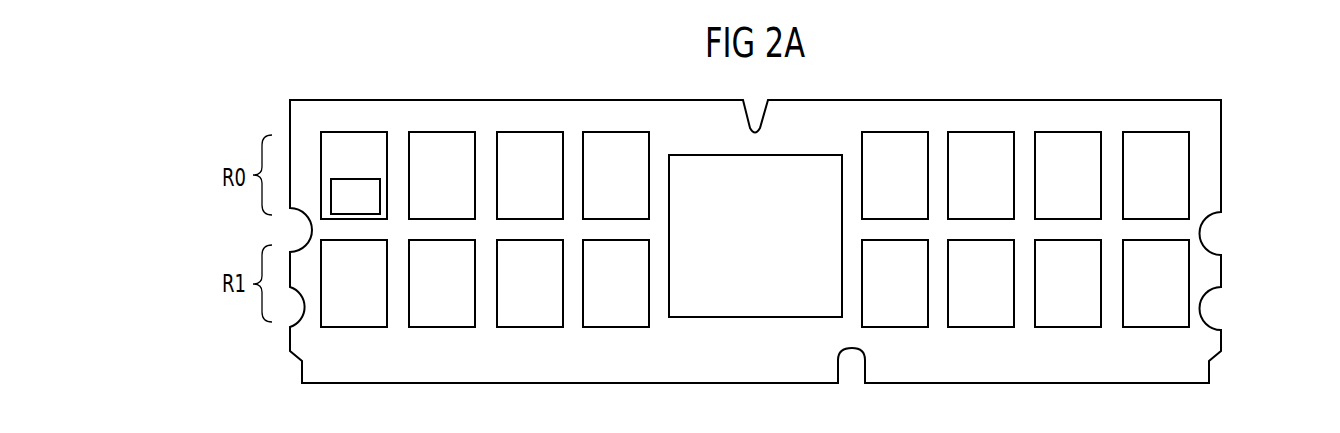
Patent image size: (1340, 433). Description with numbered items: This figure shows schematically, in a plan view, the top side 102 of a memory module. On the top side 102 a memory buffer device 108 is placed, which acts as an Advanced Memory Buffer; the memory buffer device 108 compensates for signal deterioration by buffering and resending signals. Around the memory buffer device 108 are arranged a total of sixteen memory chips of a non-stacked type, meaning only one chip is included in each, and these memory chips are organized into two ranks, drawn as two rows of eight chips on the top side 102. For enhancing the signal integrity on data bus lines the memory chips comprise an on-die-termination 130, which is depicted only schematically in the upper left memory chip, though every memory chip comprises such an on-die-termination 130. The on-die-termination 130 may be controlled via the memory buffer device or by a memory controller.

The top side 102 is at (1233, 149).
The memory buffer device 108 is at (732, 200).
The on-die-termination 130 is at (374, 209).